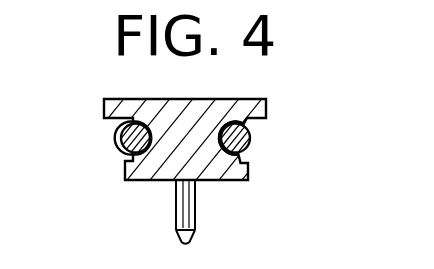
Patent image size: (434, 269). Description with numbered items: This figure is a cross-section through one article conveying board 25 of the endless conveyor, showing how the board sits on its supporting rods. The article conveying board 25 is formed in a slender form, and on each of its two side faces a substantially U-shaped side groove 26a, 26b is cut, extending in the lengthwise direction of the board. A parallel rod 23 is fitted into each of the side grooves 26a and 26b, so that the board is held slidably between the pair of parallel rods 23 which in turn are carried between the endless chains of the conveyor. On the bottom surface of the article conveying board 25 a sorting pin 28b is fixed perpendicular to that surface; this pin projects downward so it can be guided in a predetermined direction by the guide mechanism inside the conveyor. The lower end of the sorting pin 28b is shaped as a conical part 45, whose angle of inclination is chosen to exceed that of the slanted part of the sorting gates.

The article conveying board 25 is at (182, 104).
The parallel rod 23 is at (126, 136).
The side groove 26a is at (241, 160).
The side groove 26b is at (125, 162).
The sorting pin 28b is at (191, 208).
The conical part 45 is at (187, 241).